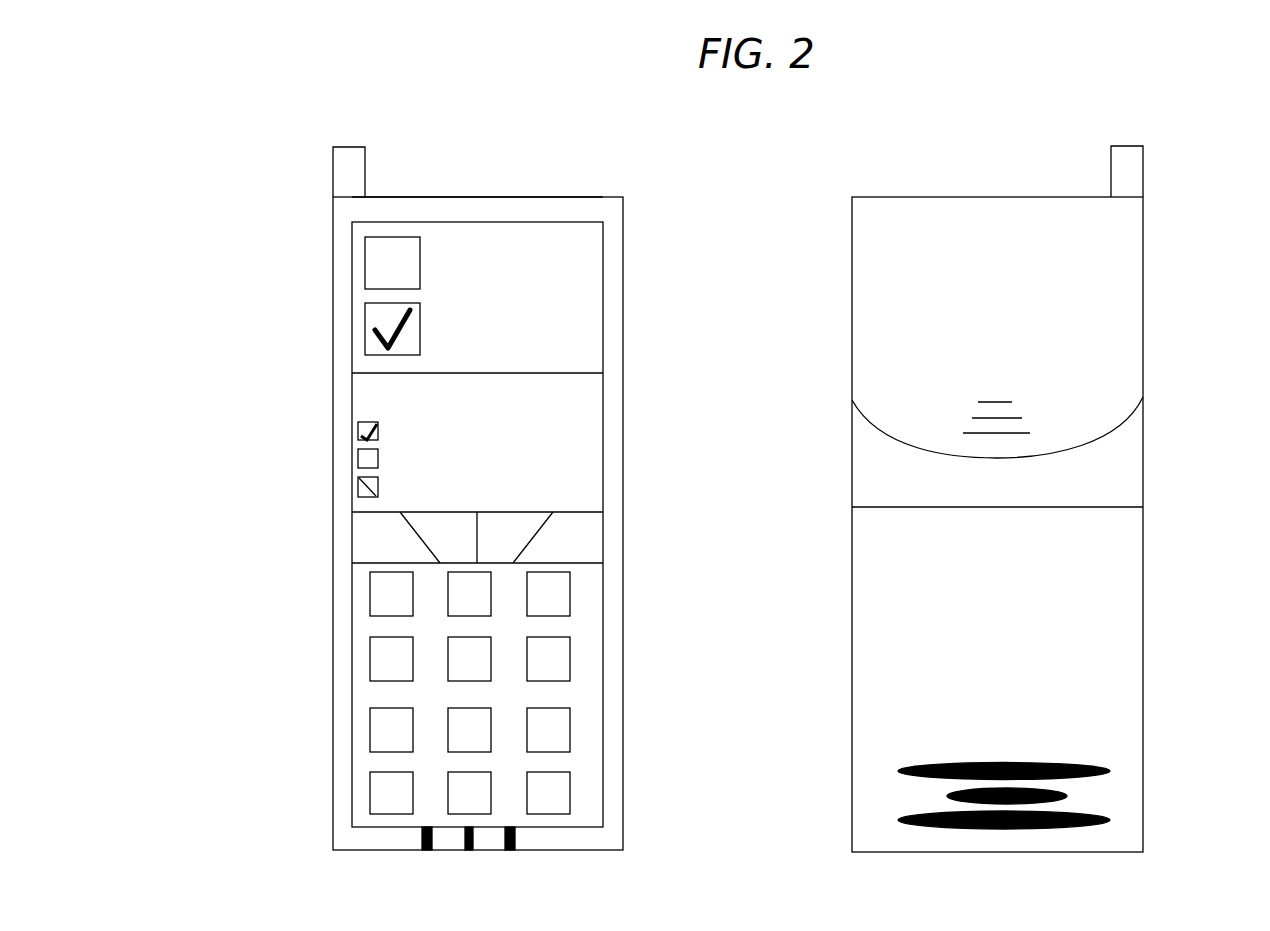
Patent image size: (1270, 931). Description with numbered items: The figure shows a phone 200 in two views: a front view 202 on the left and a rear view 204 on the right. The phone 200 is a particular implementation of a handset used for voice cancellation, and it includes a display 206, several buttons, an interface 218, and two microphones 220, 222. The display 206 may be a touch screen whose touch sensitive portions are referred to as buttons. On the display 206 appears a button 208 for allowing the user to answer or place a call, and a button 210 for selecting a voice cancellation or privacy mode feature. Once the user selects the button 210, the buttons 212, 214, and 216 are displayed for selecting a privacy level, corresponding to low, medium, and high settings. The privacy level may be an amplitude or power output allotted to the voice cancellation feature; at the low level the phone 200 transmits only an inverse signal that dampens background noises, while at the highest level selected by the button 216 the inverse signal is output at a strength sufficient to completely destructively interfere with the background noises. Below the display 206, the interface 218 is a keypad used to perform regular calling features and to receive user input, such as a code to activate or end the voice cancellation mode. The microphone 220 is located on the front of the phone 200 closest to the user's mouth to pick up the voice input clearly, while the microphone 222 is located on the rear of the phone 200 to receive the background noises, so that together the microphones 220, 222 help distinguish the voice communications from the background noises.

The phone 200 is at (418, 195).
The front view 202 is at (562, 197).
The rear view 204 is at (967, 197).
The display 206 is at (352, 220).
The button 208 is at (375, 270).
The button 210 is at (373, 344).
The button 212 is at (358, 428).
The button 214 is at (358, 458).
The button 216 is at (358, 483).
The interface 218 is at (353, 512).
The microphone 220 is at (473, 843).
The microphone 222 is at (1108, 772).